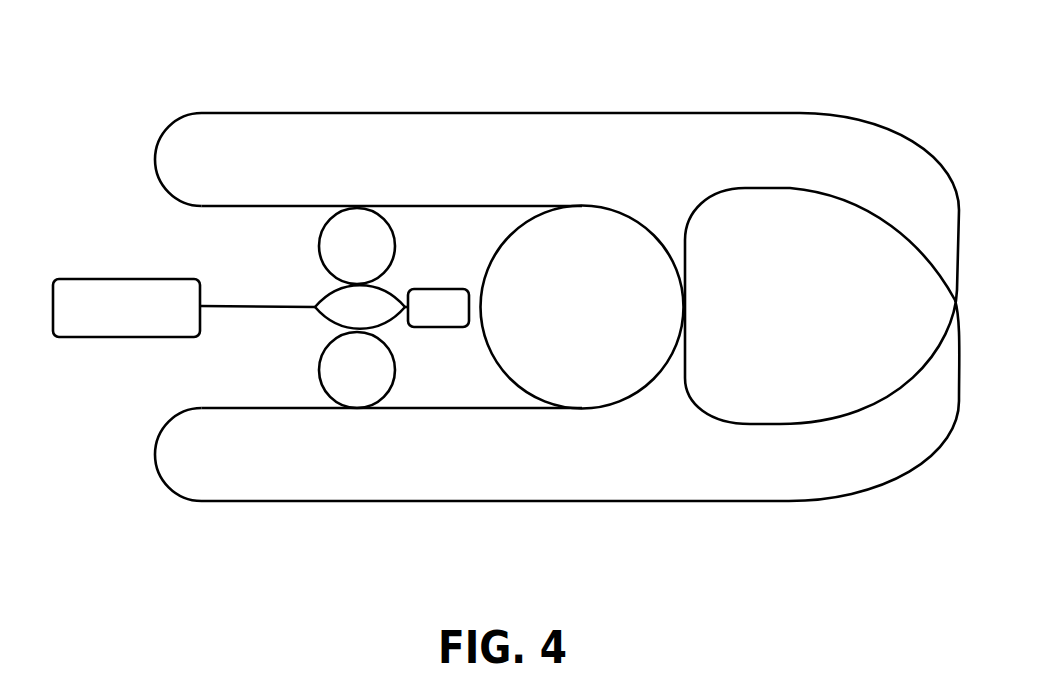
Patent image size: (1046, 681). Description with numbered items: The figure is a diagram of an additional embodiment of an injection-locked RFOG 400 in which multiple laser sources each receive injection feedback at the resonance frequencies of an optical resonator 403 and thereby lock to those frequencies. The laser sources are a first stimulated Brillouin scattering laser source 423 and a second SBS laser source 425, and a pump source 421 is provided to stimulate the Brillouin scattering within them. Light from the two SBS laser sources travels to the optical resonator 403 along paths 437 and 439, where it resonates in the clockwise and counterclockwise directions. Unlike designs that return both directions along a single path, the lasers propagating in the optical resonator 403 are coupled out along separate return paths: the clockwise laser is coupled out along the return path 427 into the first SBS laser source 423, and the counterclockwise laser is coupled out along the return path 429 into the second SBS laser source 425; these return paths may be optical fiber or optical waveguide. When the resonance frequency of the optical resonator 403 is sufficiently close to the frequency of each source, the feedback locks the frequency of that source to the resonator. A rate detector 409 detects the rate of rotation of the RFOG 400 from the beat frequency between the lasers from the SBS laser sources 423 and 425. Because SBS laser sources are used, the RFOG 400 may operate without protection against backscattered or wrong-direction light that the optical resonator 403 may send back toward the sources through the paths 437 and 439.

The injection-locked RFOG 400 is at (128, 52).
The optical resonator 403 is at (644, 218).
The rate detector 409 is at (420, 289).
The pump source 421 is at (120, 279).
The first stimulated Brillouin scattering (SBS) laser source 423 is at (317, 263).
The second SBS laser source 425 is at (317, 373).
The return path 427 is at (428, 113).
The return path 429 is at (547, 501).
The path 437 is at (437, 206).
The path 439 is at (458, 409).